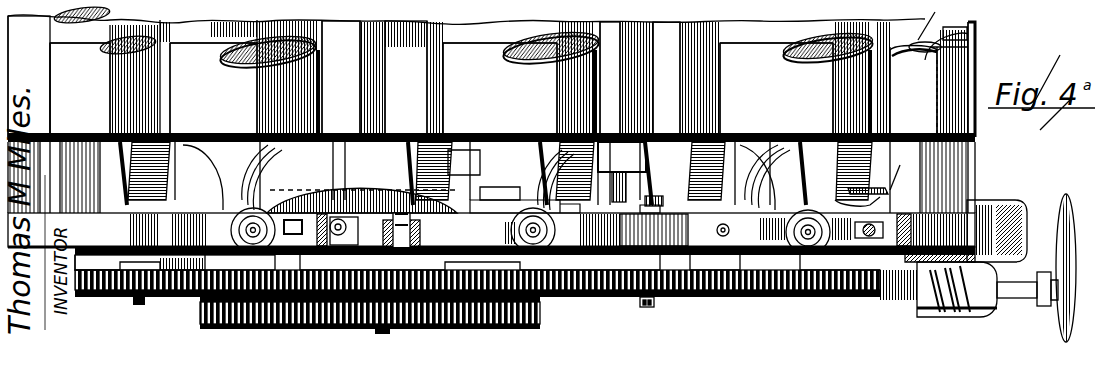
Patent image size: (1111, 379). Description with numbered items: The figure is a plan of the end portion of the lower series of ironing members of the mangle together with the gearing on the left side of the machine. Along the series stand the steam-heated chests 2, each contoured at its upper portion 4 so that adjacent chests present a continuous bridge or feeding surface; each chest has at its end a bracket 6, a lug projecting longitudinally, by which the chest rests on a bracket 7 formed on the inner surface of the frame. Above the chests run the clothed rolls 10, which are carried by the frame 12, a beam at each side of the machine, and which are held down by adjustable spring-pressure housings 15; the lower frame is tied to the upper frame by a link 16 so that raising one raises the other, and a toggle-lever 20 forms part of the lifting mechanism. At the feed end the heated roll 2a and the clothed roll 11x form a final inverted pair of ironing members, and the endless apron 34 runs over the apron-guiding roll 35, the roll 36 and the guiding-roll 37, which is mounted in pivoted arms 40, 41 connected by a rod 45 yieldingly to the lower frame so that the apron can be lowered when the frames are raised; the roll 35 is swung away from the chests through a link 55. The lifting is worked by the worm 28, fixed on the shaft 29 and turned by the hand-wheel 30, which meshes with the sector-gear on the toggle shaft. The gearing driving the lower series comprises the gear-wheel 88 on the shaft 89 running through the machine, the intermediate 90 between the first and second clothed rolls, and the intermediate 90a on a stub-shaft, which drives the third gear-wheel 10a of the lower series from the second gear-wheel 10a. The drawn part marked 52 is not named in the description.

The steam-heated chest 2 is at (463, 38).
The heated roll 2a is at (80, 90).
The upper portion 4 is at (501, 79).
The bracket 6 is at (500, 171).
The bracket 7 is at (745, 190).
The roll 10 is at (501, 90).
The gear-wheel 10a is at (598, 300).
The clothed roll 11x is at (29, 76).
The frame 12 is at (654, 230).
The adjustable spring-pressure housing 15 is at (240, 225).
The link 16 is at (290, 250).
The toggle-lever 20 is at (880, 262).
The worm 28 is at (920, 306).
The shaft 29 is at (1030, 298).
The hand-wheel 30 is at (1075, 232).
The endless apron 34 is at (913, 92).
The apron-guiding roll 35 is at (938, 26).
The roll 36 is at (975, 44).
The guiding-roll 37 is at (622, 172).
The arm 40 is at (431, 189).
The arm 41 is at (464, 162).
The link or rod 45 is at (500, 186).
The rod 52 is at (929, 98).
The link 55 is at (940, 130).
The gear-wheel 88 is at (560, 316).
The shaft 89 is at (390, 333).
The intermediate 90 is at (425, 248).
The intermediate 90a is at (672, 295).